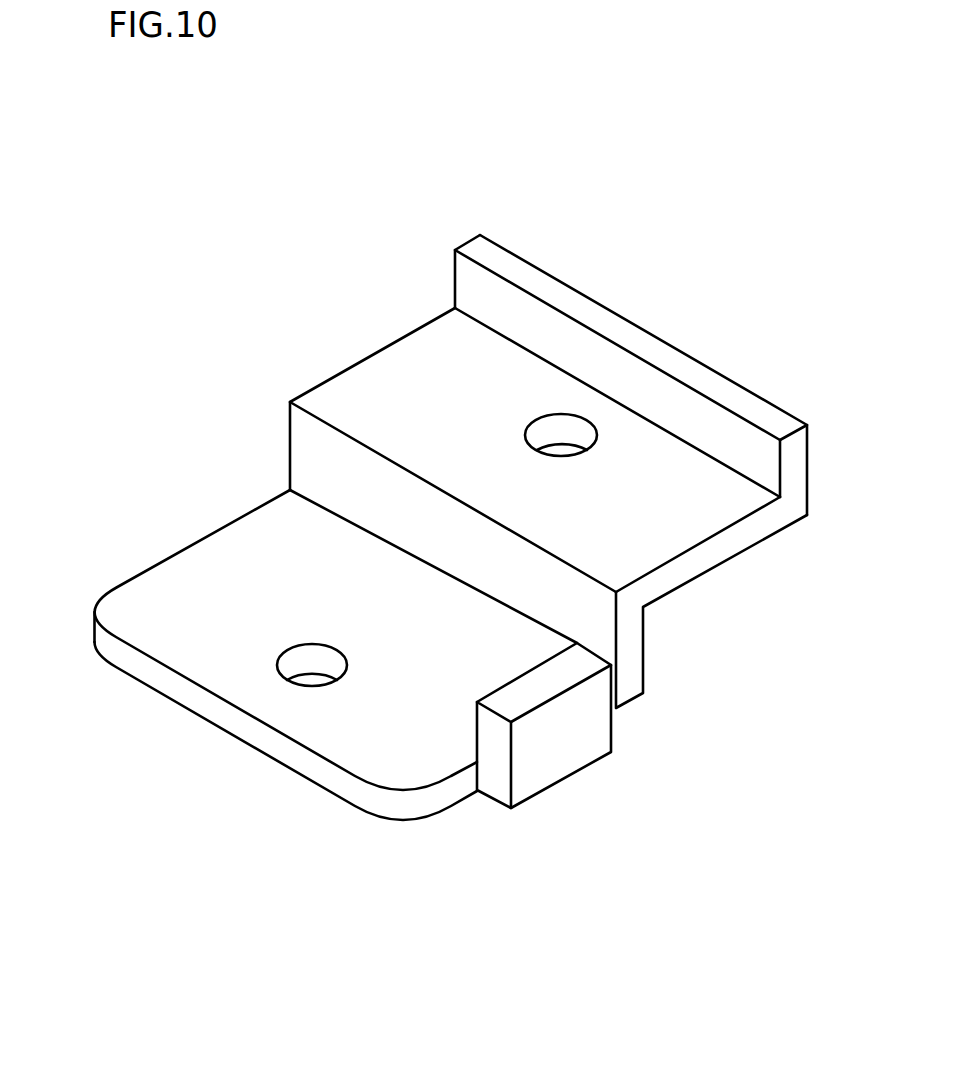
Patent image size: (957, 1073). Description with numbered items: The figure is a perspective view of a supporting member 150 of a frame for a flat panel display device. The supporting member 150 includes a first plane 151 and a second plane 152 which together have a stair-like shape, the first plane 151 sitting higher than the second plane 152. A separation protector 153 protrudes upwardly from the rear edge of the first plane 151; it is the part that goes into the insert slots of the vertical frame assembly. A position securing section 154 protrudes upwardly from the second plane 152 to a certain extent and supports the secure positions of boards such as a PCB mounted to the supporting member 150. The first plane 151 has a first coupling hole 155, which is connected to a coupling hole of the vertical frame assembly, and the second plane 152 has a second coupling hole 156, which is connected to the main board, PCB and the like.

The supporting member 150 is at (158, 256).
The first plane 151 is at (378, 397).
The second plane 152 is at (213, 648).
The separation protector 153 is at (610, 322).
The position securing section 154 is at (553, 747).
The first coupling hole 155 is at (547, 428).
The second coupling hole 156 is at (303, 657).